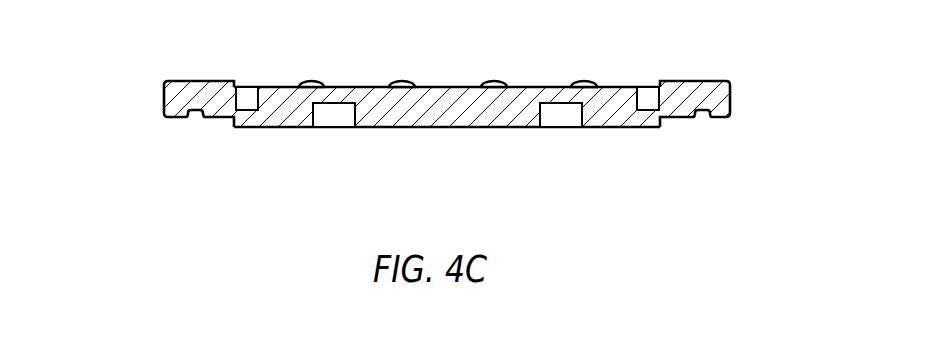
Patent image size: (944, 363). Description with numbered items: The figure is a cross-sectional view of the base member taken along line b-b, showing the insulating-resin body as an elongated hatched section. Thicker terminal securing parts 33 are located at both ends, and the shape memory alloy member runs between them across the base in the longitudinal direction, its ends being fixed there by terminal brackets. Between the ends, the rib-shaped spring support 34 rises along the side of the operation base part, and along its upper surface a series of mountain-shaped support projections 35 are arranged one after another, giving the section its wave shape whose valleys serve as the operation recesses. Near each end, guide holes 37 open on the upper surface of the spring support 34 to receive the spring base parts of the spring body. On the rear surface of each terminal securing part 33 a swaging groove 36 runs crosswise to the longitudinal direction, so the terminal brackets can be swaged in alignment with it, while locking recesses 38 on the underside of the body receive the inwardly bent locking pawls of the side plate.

The terminal securing part 33 is at (178, 83).
The spring support 34 is at (537, 84).
The support projection 35 is at (401, 83).
The swaging groove 36 is at (196, 113).
The guide hole 37 is at (248, 100).
The locking recess 38 is at (343, 118).